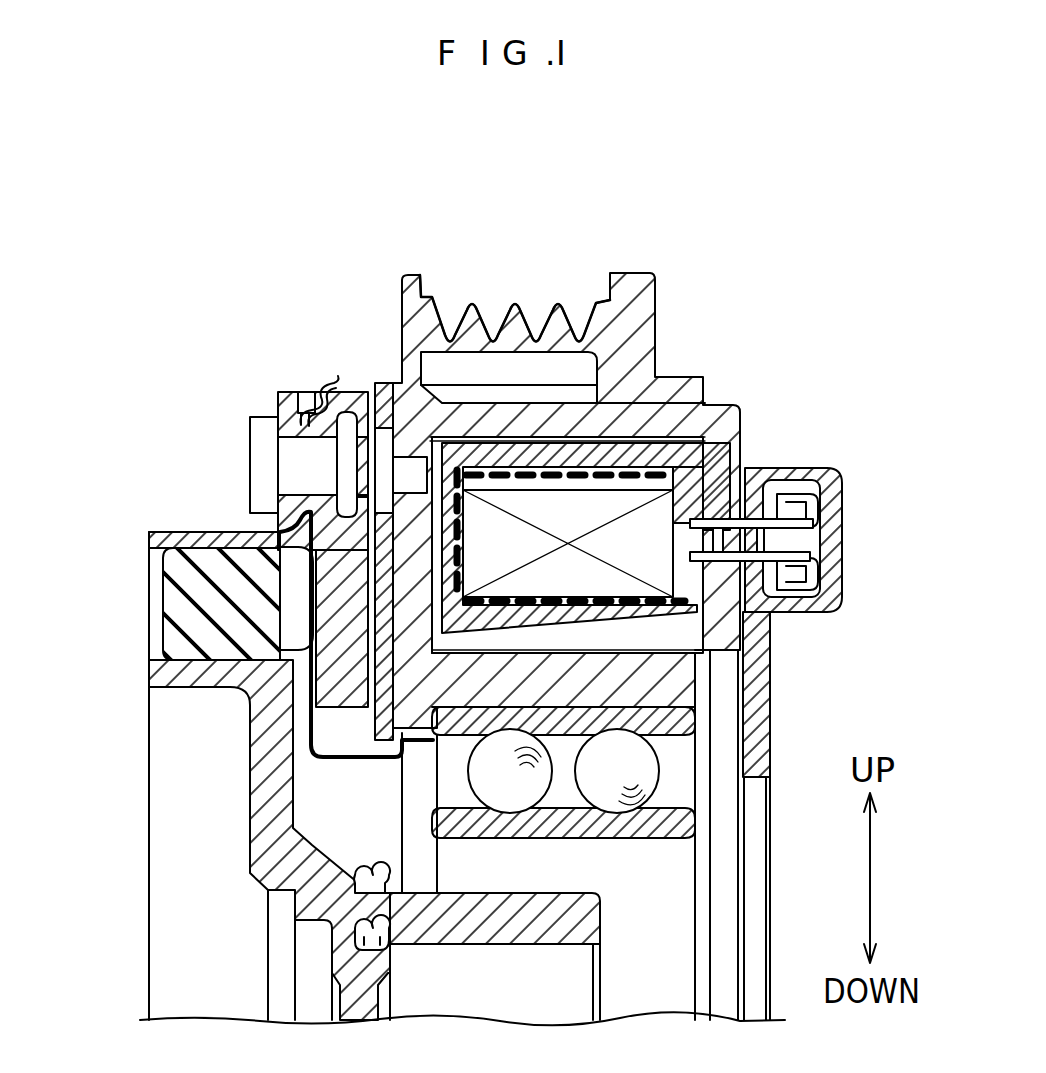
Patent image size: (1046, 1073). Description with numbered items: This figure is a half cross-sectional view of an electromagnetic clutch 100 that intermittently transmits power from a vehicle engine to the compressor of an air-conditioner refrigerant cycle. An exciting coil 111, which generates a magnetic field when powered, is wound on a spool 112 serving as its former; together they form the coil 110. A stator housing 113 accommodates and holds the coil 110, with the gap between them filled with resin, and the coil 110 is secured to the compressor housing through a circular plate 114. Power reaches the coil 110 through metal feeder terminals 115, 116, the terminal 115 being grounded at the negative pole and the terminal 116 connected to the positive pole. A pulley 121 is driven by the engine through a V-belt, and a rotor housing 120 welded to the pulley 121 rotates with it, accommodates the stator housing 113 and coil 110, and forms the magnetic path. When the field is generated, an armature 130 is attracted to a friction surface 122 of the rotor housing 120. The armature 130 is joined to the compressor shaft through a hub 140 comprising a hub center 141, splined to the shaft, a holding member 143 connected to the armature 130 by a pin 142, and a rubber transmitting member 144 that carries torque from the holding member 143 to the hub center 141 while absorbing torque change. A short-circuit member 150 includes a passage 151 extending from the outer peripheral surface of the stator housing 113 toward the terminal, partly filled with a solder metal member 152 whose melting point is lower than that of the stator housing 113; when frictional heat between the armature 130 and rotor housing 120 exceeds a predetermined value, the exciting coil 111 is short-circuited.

The electromagnetic clutch 100 is at (274, 256).
The coil 110 is at (611, 459).
The exciting coil 111 is at (612, 583).
The spool 112 is at (462, 522).
The stator housing 113 is at (665, 448).
The circular plate 114 is at (770, 737).
The feeder terminal 115 is at (818, 522).
The feeder terminal 116 is at (814, 570).
The rotor housing 120 is at (384, 395).
The pulley 121 is at (405, 272).
The friction surface 122 is at (291, 600).
The armature 130 is at (360, 393).
The hub 140 is at (140, 524).
The hub center 141 is at (263, 848).
The pin 142 is at (250, 433).
The holding member 143 is at (193, 530).
The transmitting member 144 is at (178, 607).
The short-circuit member 150 is at (758, 465).
The passage 151 is at (755, 545).
The metal member 152 is at (722, 462).